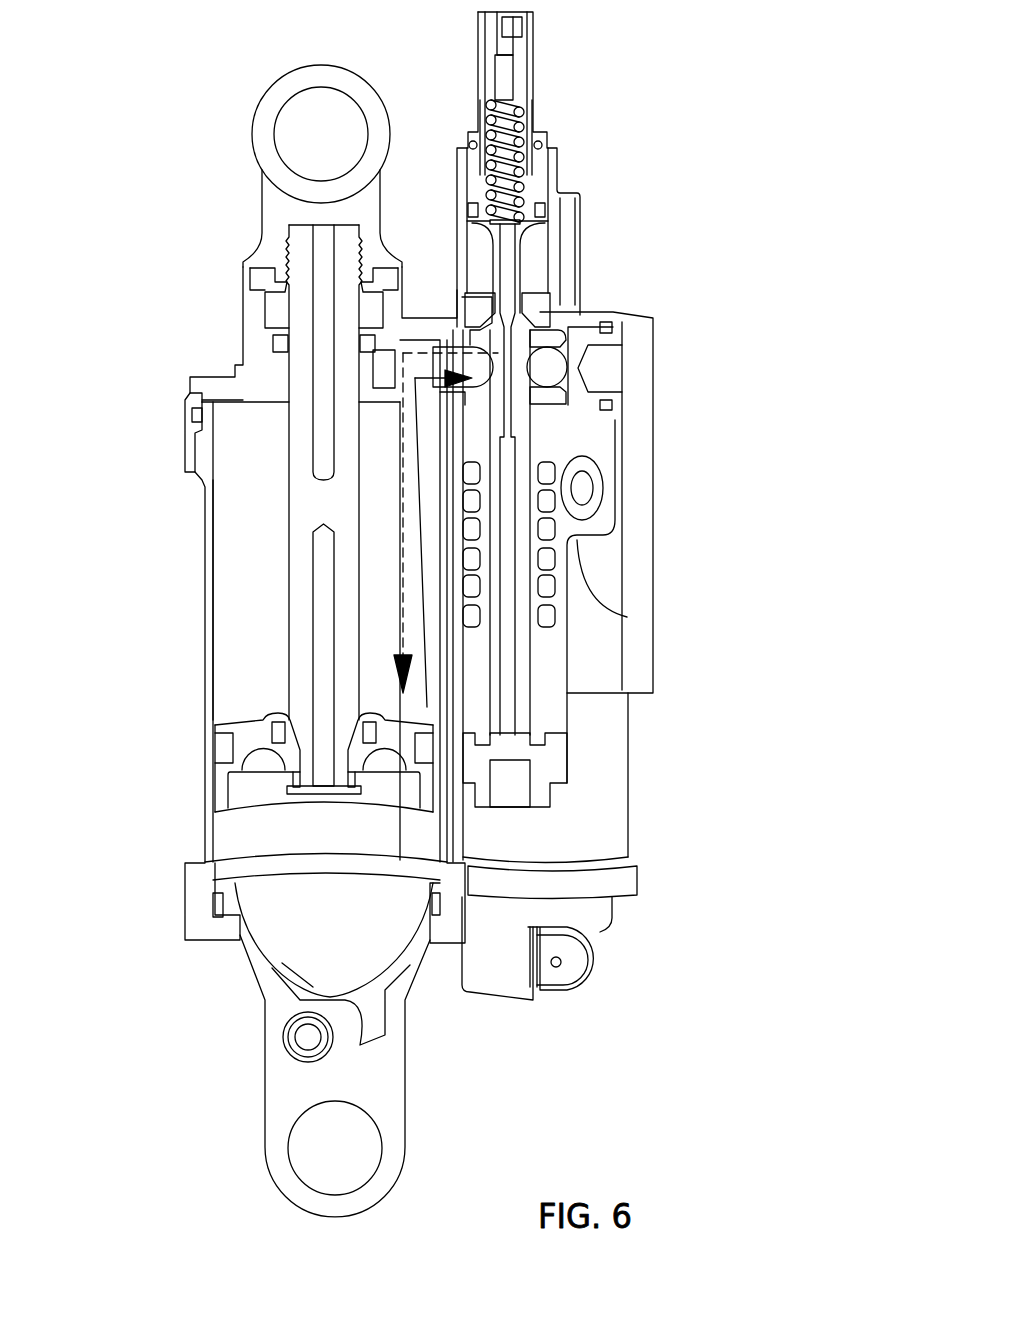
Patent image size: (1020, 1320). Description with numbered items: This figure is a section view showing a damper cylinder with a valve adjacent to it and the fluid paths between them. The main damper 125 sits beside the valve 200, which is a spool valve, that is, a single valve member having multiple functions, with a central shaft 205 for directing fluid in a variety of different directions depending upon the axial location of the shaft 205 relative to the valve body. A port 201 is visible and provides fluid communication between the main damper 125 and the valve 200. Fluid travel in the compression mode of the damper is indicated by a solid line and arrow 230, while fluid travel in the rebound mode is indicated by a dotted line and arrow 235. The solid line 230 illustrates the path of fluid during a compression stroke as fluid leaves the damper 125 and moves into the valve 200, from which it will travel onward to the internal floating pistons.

The valve 200 is at (667, 268).
The main damper 125 is at (205, 395).
The dotted line/arrow 235 is at (400, 506).
The port 201 is at (472, 367).
The solid line/arrow 230 is at (420, 457).
The central shaft 205 is at (542, 653).